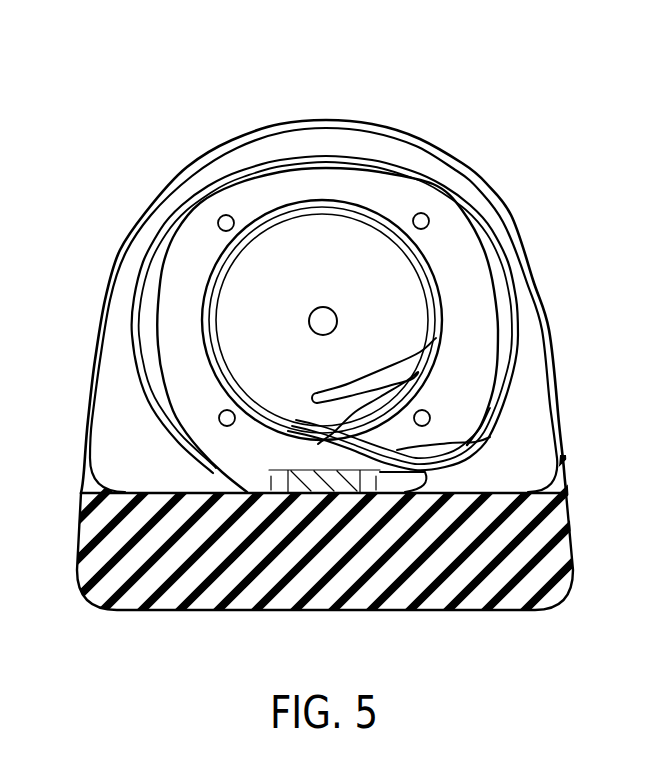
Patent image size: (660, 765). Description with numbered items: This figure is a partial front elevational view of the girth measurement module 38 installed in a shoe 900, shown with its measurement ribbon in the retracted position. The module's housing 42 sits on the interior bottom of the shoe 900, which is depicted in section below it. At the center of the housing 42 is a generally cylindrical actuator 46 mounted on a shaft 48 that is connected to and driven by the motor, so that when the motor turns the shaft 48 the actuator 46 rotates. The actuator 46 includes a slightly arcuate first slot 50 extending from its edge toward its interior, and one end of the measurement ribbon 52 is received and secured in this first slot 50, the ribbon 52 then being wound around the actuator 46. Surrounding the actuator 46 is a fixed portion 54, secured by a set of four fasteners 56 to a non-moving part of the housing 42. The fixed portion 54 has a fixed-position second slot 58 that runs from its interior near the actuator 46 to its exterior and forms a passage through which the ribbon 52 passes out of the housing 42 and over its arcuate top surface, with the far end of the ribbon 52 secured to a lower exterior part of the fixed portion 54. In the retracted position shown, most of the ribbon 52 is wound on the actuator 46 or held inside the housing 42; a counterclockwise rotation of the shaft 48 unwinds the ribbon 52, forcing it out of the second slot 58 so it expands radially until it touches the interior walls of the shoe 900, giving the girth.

The girth measurement module 38 is at (243, 173).
The housing 42 is at (472, 253).
The actuator 46 is at (368, 252).
The shaft 48 is at (323, 321).
The first slot 50 is at (374, 383).
The measurement ribbon 52 is at (520, 358).
The fixed portion 54 is at (192, 422).
The fasteners 56 is at (223, 229).
The second slot 58 is at (460, 443).
The shoe 900 is at (563, 512).